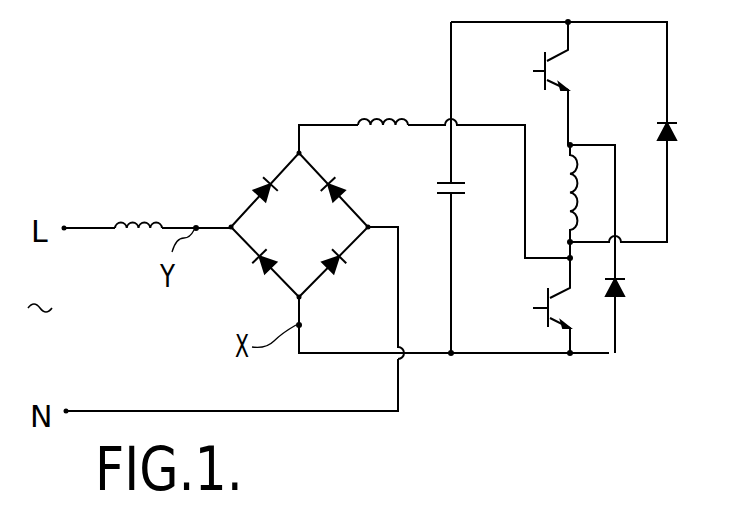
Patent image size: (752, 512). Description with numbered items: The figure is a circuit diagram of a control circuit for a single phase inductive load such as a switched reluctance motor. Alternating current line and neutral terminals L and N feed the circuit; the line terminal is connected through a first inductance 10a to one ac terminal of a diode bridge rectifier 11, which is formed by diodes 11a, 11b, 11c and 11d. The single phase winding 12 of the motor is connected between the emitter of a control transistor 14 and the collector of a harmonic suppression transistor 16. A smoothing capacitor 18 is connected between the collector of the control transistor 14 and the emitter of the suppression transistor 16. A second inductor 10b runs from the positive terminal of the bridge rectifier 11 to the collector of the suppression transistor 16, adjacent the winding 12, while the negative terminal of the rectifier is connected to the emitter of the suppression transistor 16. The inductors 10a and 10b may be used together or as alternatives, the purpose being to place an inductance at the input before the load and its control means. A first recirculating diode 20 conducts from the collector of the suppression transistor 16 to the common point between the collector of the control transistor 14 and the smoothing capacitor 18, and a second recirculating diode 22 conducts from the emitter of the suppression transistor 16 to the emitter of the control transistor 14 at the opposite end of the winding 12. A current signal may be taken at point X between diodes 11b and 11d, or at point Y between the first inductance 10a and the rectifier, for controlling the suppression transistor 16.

The first inductance 10a is at (133, 215).
The second inductor 10b is at (388, 116).
The diode bridge rectifier 11 is at (306, 234).
The diode 11a is at (262, 187).
The diode 11b is at (343, 267).
The diode 11c is at (330, 186).
The diode 11d is at (265, 262).
The single phase winding 12 is at (568, 181).
The control transistor 14 is at (555, 72).
The harmonic suppression transistor 16 is at (557, 305).
The smoothing capacitor 18 is at (456, 194).
The first recirculating diode 20 is at (677, 132).
The second recirculating diode 22 is at (622, 293).